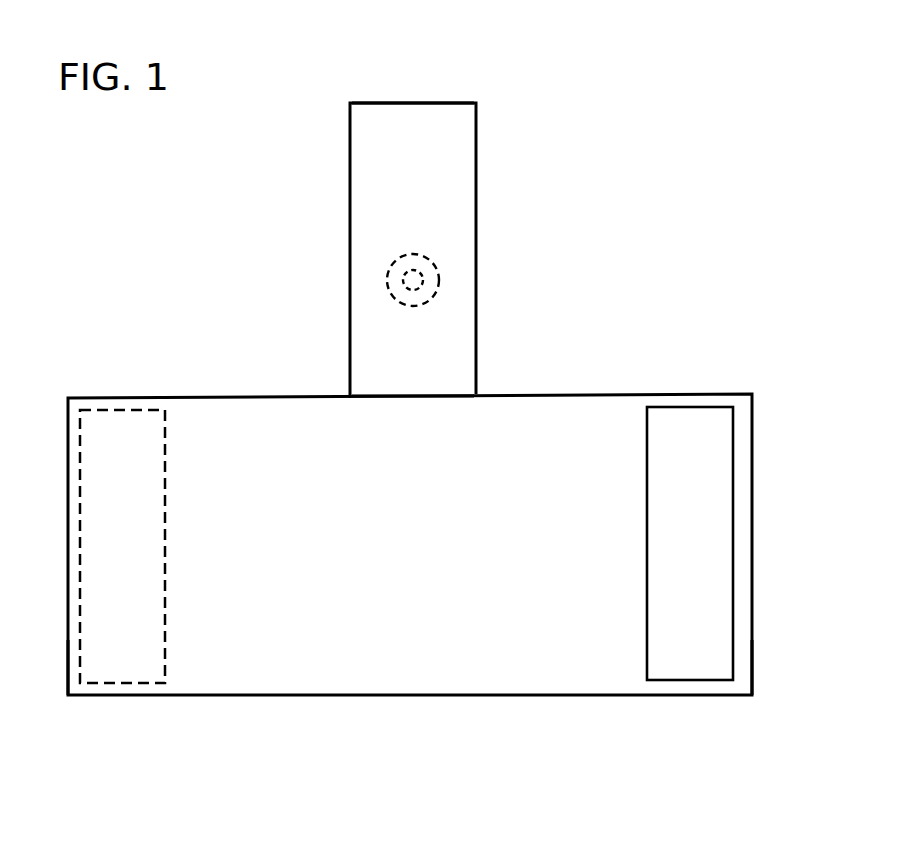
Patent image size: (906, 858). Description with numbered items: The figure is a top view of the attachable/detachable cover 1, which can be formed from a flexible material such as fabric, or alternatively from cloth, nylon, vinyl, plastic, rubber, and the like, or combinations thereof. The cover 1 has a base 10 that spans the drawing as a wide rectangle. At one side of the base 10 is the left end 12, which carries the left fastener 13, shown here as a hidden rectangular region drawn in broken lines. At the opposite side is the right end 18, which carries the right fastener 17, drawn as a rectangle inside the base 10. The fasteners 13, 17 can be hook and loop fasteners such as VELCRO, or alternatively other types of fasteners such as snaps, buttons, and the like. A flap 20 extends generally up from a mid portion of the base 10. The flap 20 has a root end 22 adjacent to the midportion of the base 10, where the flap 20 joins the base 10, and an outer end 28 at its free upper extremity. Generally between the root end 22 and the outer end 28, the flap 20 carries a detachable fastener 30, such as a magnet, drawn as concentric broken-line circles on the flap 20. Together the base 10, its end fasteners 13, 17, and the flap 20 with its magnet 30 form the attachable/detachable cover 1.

The attachable/detachable cover 1 is at (677, 197).
The base of cover 10 is at (450, 670).
The left end 12 is at (68, 650).
The left fastener 13 is at (127, 447).
The right fastener 17 is at (702, 428).
The right end 18 is at (752, 657).
The flap 20 is at (425, 190).
The root end of flap 22 is at (437, 395).
The outer end of flap 28 is at (408, 103).
The detachable fastener 30 is at (397, 278).